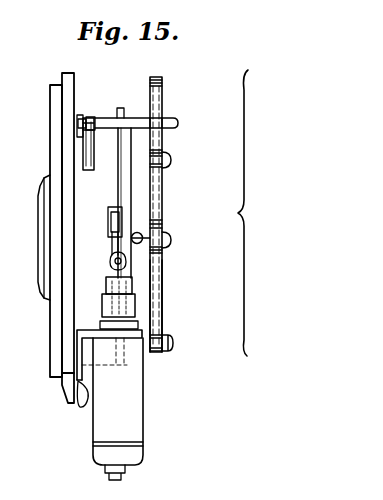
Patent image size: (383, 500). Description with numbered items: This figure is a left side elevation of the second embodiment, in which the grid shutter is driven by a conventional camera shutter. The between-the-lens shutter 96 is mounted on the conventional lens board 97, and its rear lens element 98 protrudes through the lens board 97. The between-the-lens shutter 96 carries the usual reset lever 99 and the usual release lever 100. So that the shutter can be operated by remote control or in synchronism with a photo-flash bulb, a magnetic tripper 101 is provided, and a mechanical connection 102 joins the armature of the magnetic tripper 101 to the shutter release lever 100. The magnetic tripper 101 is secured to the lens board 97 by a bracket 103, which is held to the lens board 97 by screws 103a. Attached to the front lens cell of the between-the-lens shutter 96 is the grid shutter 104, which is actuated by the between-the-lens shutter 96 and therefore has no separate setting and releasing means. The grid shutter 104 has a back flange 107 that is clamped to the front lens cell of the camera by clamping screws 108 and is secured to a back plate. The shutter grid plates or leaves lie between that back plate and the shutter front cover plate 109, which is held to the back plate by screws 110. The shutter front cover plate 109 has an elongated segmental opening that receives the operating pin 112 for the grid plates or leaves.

The between-the-lens shutter 96 is at (82, 213).
The lens board 97 is at (66, 335).
The rear lens element 98 is at (47, 193).
The reset lever 99 is at (93, 140).
The release lever 100 is at (110, 209).
The magnetic tripper 101 is at (143, 418).
The mechanical connection 102 is at (110, 254).
The bracket 103 is at (78, 381).
The screws 103a is at (74, 401).
The grid shutter 104 is at (264, 213).
The back flange 107 is at (145, 190).
The clamping screws 108 is at (141, 236).
The shutter front cover plate 109 is at (152, 297).
The screws 110 is at (171, 162).
The operating pin 112 is at (140, 119).